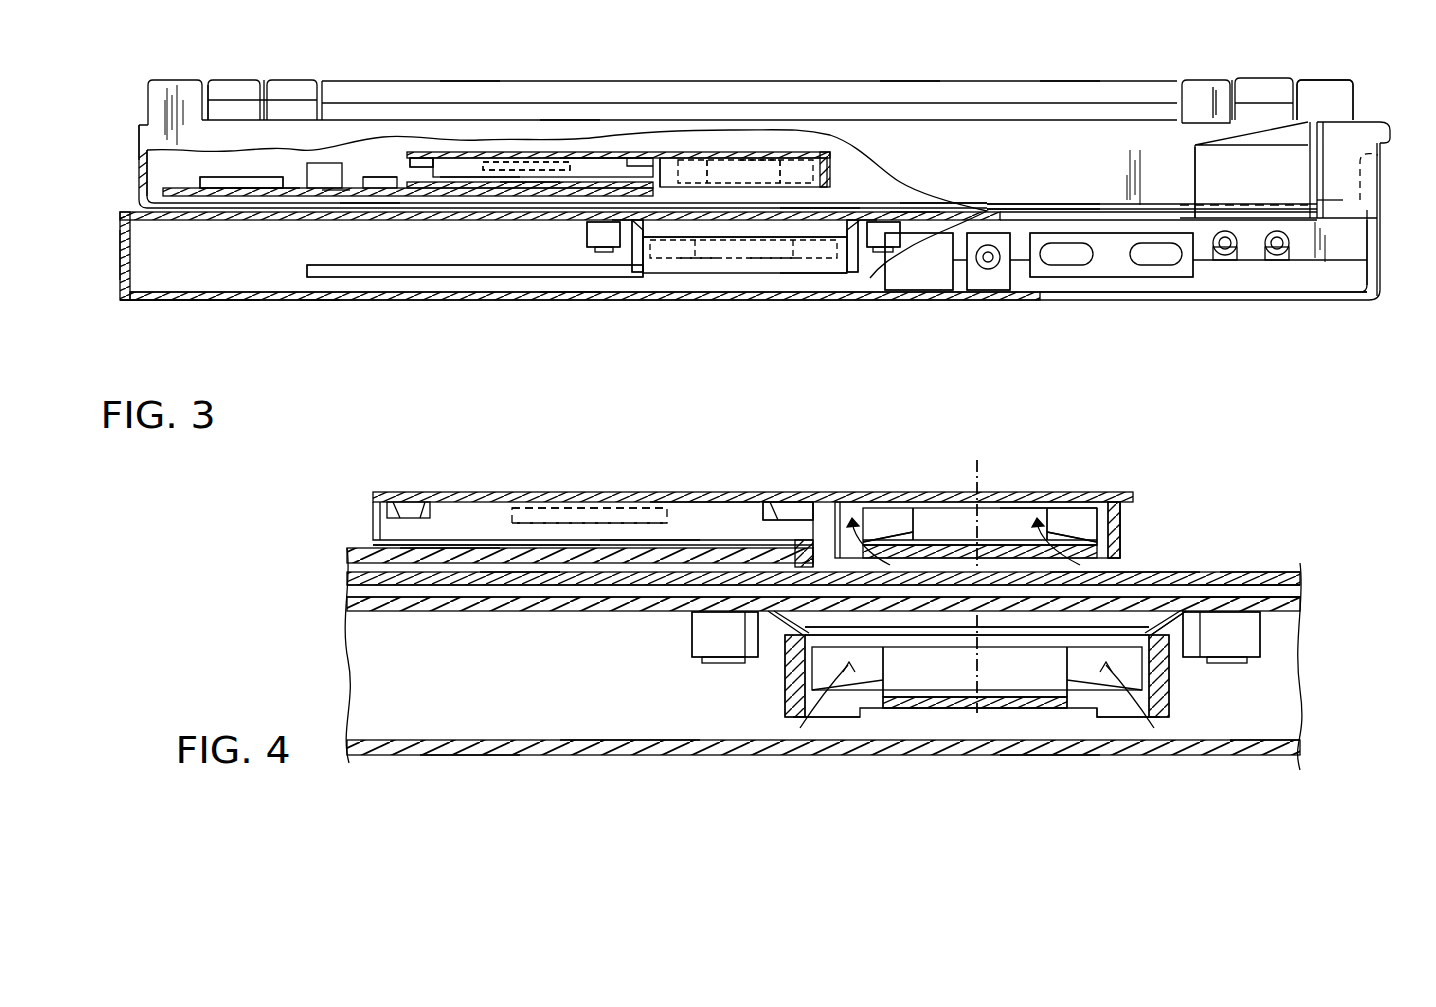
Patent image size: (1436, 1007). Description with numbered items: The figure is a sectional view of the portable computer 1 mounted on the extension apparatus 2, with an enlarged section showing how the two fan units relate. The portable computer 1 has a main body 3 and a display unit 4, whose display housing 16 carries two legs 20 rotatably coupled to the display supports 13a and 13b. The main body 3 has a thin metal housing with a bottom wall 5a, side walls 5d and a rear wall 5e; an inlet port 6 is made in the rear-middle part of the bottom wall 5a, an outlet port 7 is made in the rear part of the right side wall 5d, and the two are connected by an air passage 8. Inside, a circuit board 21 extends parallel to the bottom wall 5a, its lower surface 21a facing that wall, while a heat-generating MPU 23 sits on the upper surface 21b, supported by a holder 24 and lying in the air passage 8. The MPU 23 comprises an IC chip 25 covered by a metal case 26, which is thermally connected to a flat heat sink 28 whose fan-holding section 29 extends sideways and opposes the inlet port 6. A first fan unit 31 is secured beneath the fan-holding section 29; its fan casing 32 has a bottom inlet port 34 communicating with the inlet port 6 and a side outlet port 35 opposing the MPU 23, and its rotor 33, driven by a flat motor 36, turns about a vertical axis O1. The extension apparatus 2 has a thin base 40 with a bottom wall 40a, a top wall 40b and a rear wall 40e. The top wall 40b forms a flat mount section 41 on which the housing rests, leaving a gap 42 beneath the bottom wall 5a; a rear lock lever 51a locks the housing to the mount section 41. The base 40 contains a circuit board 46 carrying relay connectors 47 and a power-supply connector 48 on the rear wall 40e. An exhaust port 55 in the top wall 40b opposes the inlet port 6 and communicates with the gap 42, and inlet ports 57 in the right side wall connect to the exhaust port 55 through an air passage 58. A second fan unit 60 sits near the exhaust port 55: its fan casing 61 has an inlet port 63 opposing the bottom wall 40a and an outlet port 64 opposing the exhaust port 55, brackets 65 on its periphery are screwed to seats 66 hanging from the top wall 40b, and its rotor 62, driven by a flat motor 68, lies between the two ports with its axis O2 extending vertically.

In FIG. 3, the portable computer 1 is at (1053, 75).
In FIG. 3, the extension apparatus 2 is at (216, 303).
In FIG. 4, the extension apparatus 2 is at (472, 757).
In FIG. 3, the main body 3 is at (570, 130).
In FIG. 3, the display unit 4 is at (910, 86).
In FIG. 3, the bottom wall 5a is at (960, 203).
In FIG. 4, the bottom wall 5a is at (1260, 578).
In FIG. 3, the side wall 5d is at (140, 150).
In FIG. 3, the rear wall 5e is at (1140, 140).
In FIG. 3, the inlet port 6 is at (825, 203).
In FIG. 4, the inlet port 6 is at (1128, 578).
In FIG. 3, the outlet port 7 is at (140, 178).
In FIG. 3, the air passage 8 is at (380, 165).
In FIG. 3, the display support 13a is at (1333, 90).
In FIG. 3, the display support 13b is at (180, 92).
In FIG. 3, the display housing 16 is at (470, 88).
In FIG. 3, the leg 20 is at (232, 92).
In FIG. 3, the circuit board 21 is at (262, 197).
In FIG. 4, the circuit board 21 is at (445, 562).
In FIG. 3, the lower surface 21a is at (370, 203).
In FIG. 4, the lower surface 21a is at (515, 580).
In FIG. 3, the upper surface 21b is at (295, 178).
In FIG. 4, the upper surface 21b is at (655, 548).
In FIG. 3, the MPU 23 is at (598, 168).
In FIG. 4, the MPU 23 is at (705, 512).
In FIG. 3, the holder 24 is at (525, 190).
In FIG. 4, the holder 24 is at (490, 548).
In FIG. 3, the IC chip 25 is at (510, 165).
In FIG. 4, the IC chip 25 is at (590, 515).
In FIG. 3, the case 26 is at (472, 178).
In FIG. 4, the case 26 is at (548, 515).
In FIG. 3, the heat sink 28 is at (440, 148).
In FIG. 4, the heat sink 28 is at (785, 500).
In FIG. 3, the fan-holding section 29 is at (760, 168).
In FIG. 4, the fan-holding section 29 is at (1043, 510).
In FIG. 3, the first fan unit 31 is at (800, 170).
In FIG. 4, the first fan unit 31 is at (1105, 510).
In FIG. 3, the fan casing 32 is at (680, 168).
In FIG. 4, the fan casing 32 is at (1122, 525).
In FIG. 3, the rotor 33 is at (730, 170).
In FIG. 4, the rotor 33 is at (940, 515).
In FIG. 4, the inlet port 34 is at (1058, 560).
In FIG. 4, the outlet port 35 is at (850, 525).
In FIG. 4, the flat motor 36 is at (1003, 540).
In FIG. 3, the base 40 is at (125, 302).
In FIG. 4, the base 40 is at (1283, 695).
In FIG. 3, the bottom wall 40a is at (320, 300).
In FIG. 4, the bottom wall 40a is at (1040, 755).
In FIG. 3, the top wall 40b is at (907, 206).
In FIG. 4, the top wall 40b is at (1277, 603).
In FIG. 3, the rear wall 40e is at (1147, 270).
In FIG. 3, the mount section 41 is at (338, 190).
In FIG. 3, the gap 42 is at (993, 208).
In FIG. 4, the gap 42 is at (1290, 592).
In FIG. 3, the circuit board 46 is at (435, 270).
In FIG. 3, the relay connector 47 is at (923, 270).
In FIG. 3, the power-supply connector 48 is at (995, 270).
In FIG. 3, the rear lock lever 51a is at (1360, 200).
In FIG. 3, the exhaust port 55 is at (727, 236).
In FIG. 4, the exhaust port 55 is at (862, 634).
In FIG. 3, the inlet port 57 is at (122, 255).
In FIG. 3, the air passage 58 is at (562, 270).
In FIG. 4, the air passage 58 is at (625, 737).
In FIG. 3, the second fan unit 60 is at (775, 256).
In FIG. 4, the second fan unit 60 is at (883, 705).
In FIG. 3, the fan casing 61 is at (808, 270).
In FIG. 4, the fan casing 61 is at (1165, 703).
In FIG. 3, the rotor 62 is at (697, 254).
In FIG. 4, the rotor 62 is at (1082, 690).
In FIG. 4, the inlet port 63 is at (842, 707).
In FIG. 4, the outlet port 64 is at (1120, 637).
In FIG. 3, the bracket 65 is at (638, 247).
In FIG. 4, the bracket 65 is at (1165, 685).
In FIG. 3, the seat 66 is at (603, 234).
In FIG. 4, the seat 66 is at (1243, 633).
In FIG. 4, the flat motor 68 is at (935, 707).
In FIG. 4, the axis of the rotor O1 is at (975, 494).
In FIG. 4, the axis of the rotor O2 is at (978, 713).